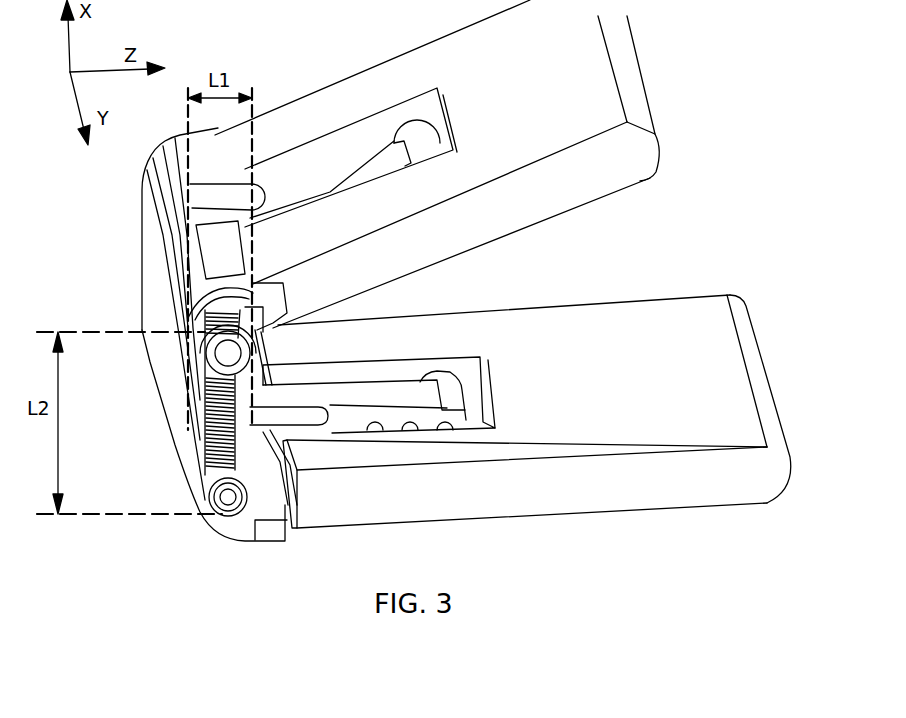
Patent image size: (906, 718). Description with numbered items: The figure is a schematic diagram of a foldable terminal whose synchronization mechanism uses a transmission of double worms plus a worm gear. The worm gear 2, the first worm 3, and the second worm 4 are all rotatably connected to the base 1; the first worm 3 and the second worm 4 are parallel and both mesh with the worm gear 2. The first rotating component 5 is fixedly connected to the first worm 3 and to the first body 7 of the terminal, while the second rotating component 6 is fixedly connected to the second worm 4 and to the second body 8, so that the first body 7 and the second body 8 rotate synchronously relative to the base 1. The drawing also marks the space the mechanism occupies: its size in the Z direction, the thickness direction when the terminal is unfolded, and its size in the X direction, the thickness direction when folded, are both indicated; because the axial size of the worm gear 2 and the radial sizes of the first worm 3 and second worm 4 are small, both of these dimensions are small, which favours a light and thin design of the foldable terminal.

The base 1 is at (165, 311).
The worm gear 2 is at (208, 417).
The first worm 3 is at (230, 501).
The second worm 4 is at (233, 353).
The first rotating component 5 is at (368, 395).
The second rotating component 6 is at (365, 172).
The first body 7 is at (580, 325).
The second body 8 is at (548, 123).